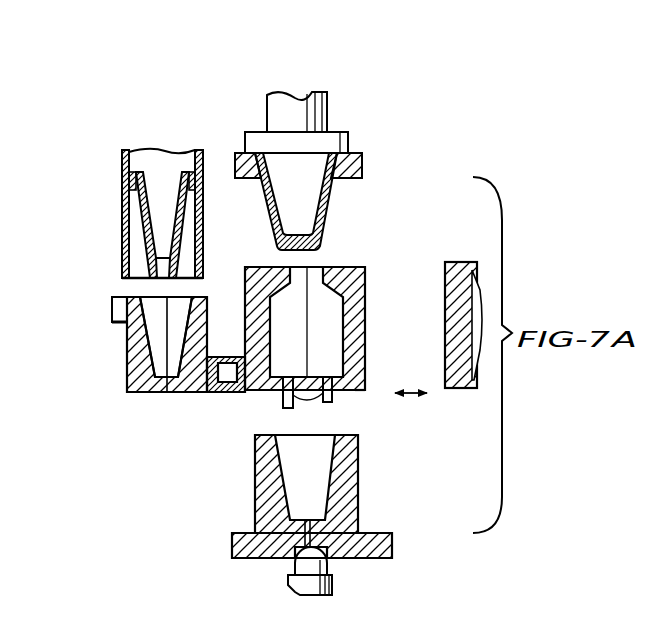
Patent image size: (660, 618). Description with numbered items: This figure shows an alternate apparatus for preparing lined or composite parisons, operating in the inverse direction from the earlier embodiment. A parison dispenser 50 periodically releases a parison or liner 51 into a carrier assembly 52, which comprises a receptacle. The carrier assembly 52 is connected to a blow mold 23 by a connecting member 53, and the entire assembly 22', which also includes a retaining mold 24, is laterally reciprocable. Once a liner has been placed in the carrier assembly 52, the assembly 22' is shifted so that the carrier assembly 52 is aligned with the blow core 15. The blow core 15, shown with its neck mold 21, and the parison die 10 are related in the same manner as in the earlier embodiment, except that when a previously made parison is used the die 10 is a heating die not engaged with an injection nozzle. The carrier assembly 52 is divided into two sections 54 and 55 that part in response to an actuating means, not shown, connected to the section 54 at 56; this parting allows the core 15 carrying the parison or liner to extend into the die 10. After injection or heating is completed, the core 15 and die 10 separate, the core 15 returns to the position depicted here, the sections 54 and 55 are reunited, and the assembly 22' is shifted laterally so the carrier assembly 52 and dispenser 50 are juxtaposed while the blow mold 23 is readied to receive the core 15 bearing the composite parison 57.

The parison die 10 is at (358, 500).
The blow core 15 is at (322, 118).
The neck mold 21 is at (355, 168).
The assembly 22' is at (360, 295).
The blow mold 23 is at (357, 391).
The retaining mold 24 is at (460, 390).
The parison dispenser 50 is at (200, 152).
The parison or liner 51 is at (133, 208).
The carrier assembly 52 is at (126, 366).
The connecting member 53 is at (225, 392).
The section 54 is at (137, 392).
The section 55 is at (190, 392).
The actuating connection 56 is at (112, 301).
The composite parison 57 is at (320, 222).